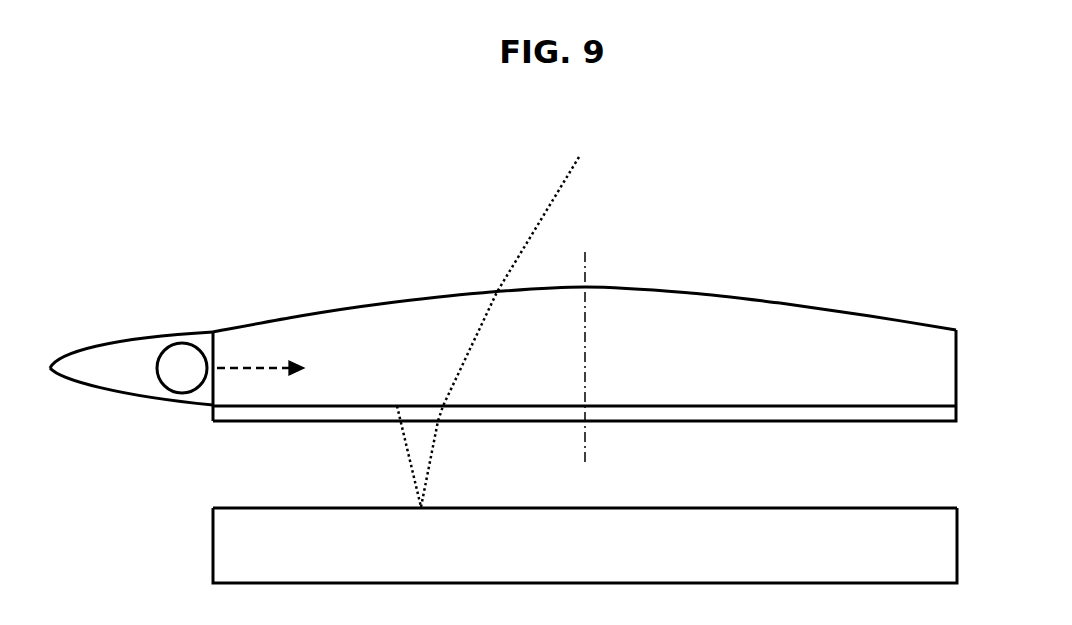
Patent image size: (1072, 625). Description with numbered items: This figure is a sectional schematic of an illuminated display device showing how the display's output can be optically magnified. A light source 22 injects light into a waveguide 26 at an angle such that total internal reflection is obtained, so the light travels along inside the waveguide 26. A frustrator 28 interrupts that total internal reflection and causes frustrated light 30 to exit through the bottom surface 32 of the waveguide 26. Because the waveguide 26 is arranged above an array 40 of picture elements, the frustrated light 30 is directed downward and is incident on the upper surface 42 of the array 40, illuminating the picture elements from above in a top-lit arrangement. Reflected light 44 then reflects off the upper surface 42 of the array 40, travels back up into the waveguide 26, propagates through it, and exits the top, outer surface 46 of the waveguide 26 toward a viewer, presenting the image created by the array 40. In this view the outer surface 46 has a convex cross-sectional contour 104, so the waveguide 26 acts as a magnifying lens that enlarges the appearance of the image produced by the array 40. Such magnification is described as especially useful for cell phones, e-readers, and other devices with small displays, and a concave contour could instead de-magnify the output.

The light source 22 is at (165, 352).
The waveguide 26 is at (957, 367).
The frustrator 28 is at (957, 413).
The frustrated light 30 is at (408, 462).
The bottom surface 32 is at (235, 407).
The array of picture elements 40 is at (957, 568).
The upper surface 42 is at (930, 507).
The reflected light 44 is at (433, 455).
The outer surface 46 is at (918, 322).
The convex cross-sectional contour 104 is at (638, 287).